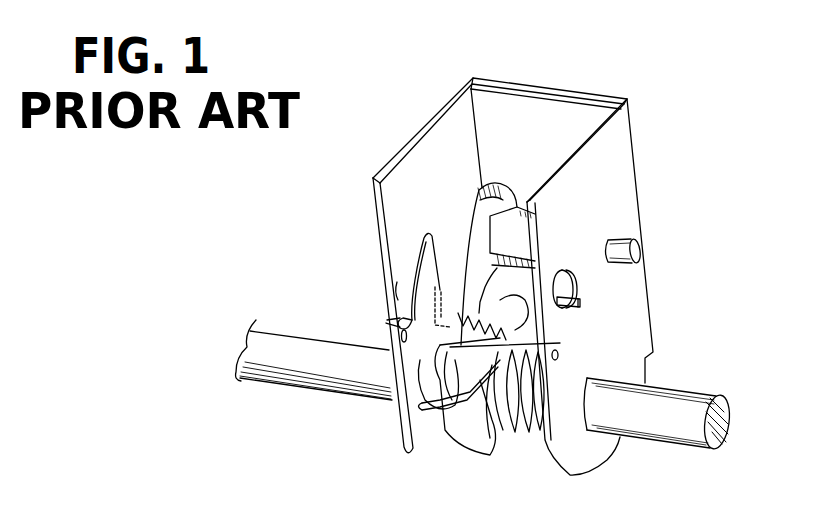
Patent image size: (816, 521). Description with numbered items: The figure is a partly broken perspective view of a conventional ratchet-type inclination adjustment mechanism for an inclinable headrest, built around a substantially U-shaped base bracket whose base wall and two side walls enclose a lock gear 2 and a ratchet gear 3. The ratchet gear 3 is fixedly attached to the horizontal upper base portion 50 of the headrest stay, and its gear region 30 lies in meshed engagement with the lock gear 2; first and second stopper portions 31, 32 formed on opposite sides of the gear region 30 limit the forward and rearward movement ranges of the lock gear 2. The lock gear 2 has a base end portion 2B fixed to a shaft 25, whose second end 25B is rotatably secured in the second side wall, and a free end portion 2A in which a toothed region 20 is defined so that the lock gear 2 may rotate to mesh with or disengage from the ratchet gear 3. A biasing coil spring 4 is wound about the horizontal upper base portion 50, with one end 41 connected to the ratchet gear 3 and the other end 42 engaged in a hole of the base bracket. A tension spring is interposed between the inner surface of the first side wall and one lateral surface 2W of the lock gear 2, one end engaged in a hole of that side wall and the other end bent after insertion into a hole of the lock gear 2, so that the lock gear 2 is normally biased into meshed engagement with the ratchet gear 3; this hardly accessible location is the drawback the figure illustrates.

The lock gear 2 is at (453, 307).
The free end portion of lock gear 2A is at (430, 375).
The base end portion of lock gear 2B is at (492, 190).
The lateral surface of lock gear 2W is at (452, 235).
The ratchet gear 3 is at (487, 433).
The biasing coil spring 4 is at (523, 413).
The toothed region of lock gear 20 is at (460, 385).
The shaft 25 is at (510, 215).
The second end of shaft 25B is at (640, 248).
The gear region of ratchet gear 30 is at (507, 305).
The first stopper portion 31 is at (445, 380).
The second stopper portion 32 is at (515, 290).
The one end of biasing coil spring 41 is at (430, 408).
The other end of biasing coil spring 42 is at (580, 302).
The horizontal upper base portion 50 is at (653, 425).